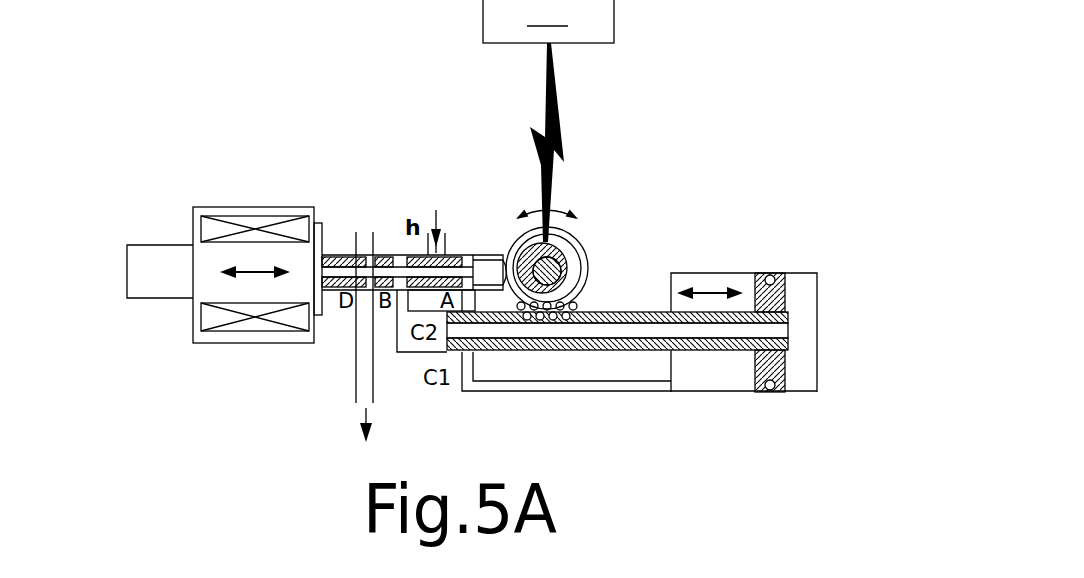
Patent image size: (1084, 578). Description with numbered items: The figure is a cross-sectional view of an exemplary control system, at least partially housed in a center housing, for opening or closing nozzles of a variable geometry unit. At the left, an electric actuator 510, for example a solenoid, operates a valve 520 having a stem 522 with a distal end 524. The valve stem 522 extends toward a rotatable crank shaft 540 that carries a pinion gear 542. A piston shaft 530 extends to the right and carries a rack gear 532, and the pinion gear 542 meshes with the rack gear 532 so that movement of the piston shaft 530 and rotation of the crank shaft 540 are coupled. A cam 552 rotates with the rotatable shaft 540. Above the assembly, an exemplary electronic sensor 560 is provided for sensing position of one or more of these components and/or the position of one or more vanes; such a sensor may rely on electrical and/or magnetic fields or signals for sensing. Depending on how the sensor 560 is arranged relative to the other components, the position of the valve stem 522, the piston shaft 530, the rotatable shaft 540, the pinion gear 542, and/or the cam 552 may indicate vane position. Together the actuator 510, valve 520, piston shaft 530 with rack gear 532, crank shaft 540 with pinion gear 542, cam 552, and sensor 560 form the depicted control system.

The electric actuator 510 is at (265, 207).
The valve 520 is at (345, 255).
The stem 522 is at (380, 255).
The distal end 524 is at (473, 255).
The piston shaft 530 is at (650, 312).
The rack gear 532 is at (585, 310).
The rotatable crank shaft 540 is at (575, 295).
The pinion gear 542 is at (567, 263).
The cam 552 is at (517, 238).
The electronic sensor 560 is at (548, 121).